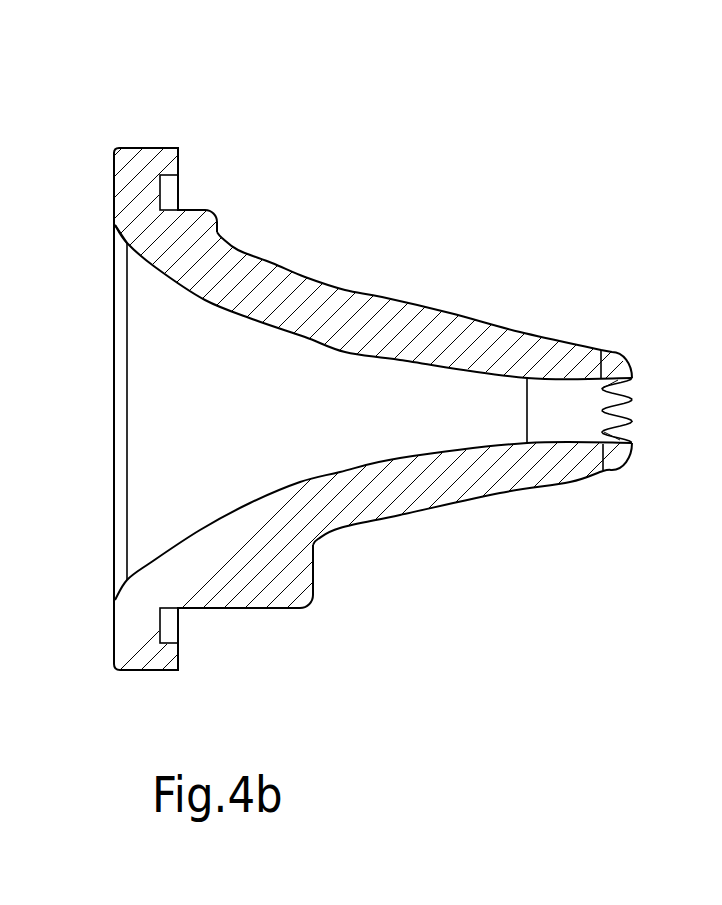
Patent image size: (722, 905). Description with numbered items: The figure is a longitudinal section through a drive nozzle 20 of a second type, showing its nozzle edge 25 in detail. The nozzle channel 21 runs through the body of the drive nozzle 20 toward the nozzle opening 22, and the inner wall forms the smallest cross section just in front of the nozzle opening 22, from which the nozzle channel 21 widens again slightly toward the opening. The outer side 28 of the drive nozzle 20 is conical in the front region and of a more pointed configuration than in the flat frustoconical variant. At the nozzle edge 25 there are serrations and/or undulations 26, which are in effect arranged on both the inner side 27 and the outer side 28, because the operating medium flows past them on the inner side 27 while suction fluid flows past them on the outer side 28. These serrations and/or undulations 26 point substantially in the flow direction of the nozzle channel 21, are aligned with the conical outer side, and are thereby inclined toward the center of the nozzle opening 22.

The drive nozzle 20 is at (81, 112).
The nozzle channel 21 is at (392, 416).
The nozzle opening 22 is at (627, 407).
The nozzle edge 25 is at (633, 371).
The serrations and/or undulations 26 is at (618, 346).
The inner side 27 is at (513, 452).
The outer side 28 is at (383, 294).